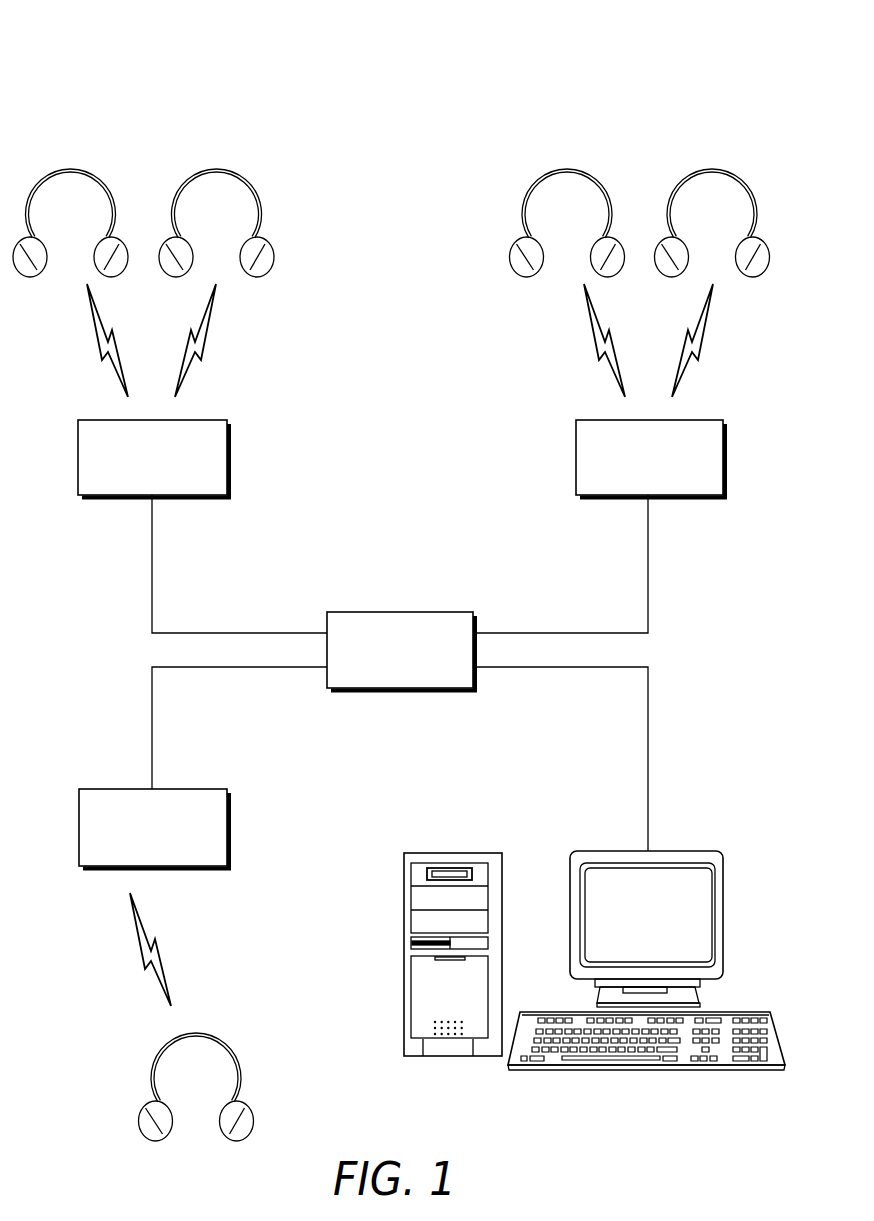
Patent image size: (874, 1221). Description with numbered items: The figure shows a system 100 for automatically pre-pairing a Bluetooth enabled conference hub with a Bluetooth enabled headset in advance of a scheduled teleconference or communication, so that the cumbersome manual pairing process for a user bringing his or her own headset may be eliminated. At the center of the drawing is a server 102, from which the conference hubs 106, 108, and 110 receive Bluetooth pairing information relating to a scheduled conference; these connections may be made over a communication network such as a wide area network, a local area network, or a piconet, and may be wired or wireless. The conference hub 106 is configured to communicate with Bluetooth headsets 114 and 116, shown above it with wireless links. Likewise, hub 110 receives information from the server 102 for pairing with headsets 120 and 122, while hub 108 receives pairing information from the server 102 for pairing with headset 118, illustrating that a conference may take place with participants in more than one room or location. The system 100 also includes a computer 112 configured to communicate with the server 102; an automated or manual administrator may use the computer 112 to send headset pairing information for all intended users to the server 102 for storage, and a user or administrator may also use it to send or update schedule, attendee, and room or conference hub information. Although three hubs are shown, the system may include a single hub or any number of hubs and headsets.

The system 100 is at (86, 48).
The server 102 is at (455, 612).
The conference hub 106 is at (208, 420).
The conference hub 108 is at (207, 789).
The conference hub 110 is at (705, 420).
The computer 112 is at (703, 851).
The Bluetooth headset 114 is at (71, 169).
The Bluetooth headset 116 is at (216, 169).
The headset 118 is at (196, 1033).
The headset 120 is at (567, 169).
The headset 122 is at (712, 169).